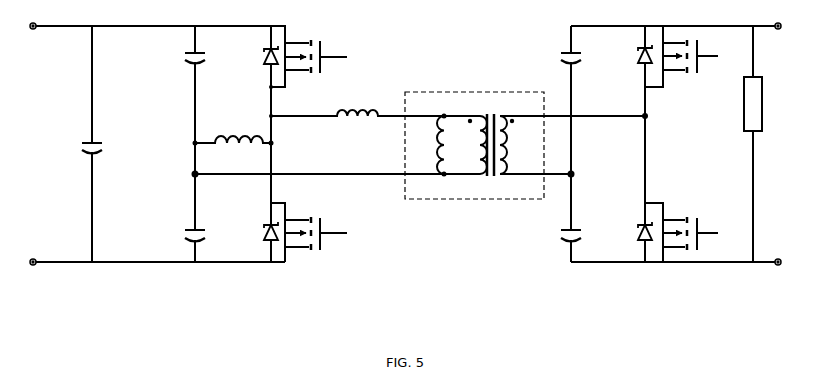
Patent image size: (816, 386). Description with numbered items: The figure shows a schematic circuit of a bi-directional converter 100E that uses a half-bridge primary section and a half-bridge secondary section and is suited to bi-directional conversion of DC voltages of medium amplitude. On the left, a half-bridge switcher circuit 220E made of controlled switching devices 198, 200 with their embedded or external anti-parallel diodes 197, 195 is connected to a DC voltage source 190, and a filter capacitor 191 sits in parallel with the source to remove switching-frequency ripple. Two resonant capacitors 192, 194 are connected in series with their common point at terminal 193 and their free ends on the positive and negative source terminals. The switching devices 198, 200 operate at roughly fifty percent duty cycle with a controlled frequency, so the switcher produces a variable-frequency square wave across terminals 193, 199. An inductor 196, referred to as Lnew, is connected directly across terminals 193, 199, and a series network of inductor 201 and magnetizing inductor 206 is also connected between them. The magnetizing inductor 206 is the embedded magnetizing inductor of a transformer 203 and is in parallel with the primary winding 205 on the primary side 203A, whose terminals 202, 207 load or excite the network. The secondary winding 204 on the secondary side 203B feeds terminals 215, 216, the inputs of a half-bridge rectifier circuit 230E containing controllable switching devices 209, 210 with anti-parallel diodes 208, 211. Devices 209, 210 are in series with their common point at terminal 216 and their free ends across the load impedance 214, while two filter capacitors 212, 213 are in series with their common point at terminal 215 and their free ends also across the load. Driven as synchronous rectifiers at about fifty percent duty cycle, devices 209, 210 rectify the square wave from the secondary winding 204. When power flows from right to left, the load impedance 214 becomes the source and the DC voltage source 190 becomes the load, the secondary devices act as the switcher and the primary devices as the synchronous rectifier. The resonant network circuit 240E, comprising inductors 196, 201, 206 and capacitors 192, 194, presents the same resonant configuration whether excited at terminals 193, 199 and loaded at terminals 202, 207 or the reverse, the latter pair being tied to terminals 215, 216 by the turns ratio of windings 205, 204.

The bi-directional converter 100E is at (394, 72).
The DC voltage source 190 is at (44, 30).
The filter capacitor 191 is at (97, 139).
The resonant capacitor 192 is at (190, 54).
The terminal 193 is at (191, 144).
The resonant capacitor 194 is at (190, 231).
The anti-parallel diode 195 is at (266, 58).
The inductor 196 is at (243, 140).
The anti-parallel diode 197 is at (266, 234).
The controlled switching device 198 is at (288, 221).
The terminal 199 is at (274, 145).
The controlled switching device 200 is at (289, 43).
The inductor 201 is at (361, 108).
The terminal 202 is at (443, 113).
The transformer 203 is at (487, 92).
The primary side 203A is at (470, 184).
The secondary side 203B is at (516, 184).
The secondary winding 204 is at (505, 131).
The primary winding 205 is at (481, 132).
The magnetizing inductor 206 is at (440, 138).
The terminal 207 is at (443, 176).
The anti-parallel diode 208 is at (637, 57).
The controllable switching device 209 is at (707, 55).
The controllable switching device 210 is at (665, 220).
The anti-parallel diode 211 is at (639, 235).
The filter capacitor 212 is at (561, 60).
The filter capacitor 213 is at (562, 232).
The load impedance 214 is at (744, 100).
The terminal 215 is at (578, 172).
The terminal 216 is at (650, 114).
The half-bridge switcher circuit 220E is at (233, 288).
The half-bridge rectifier circuit 230E is at (612, 284).
The resonant network circuit 240E is at (378, 191).